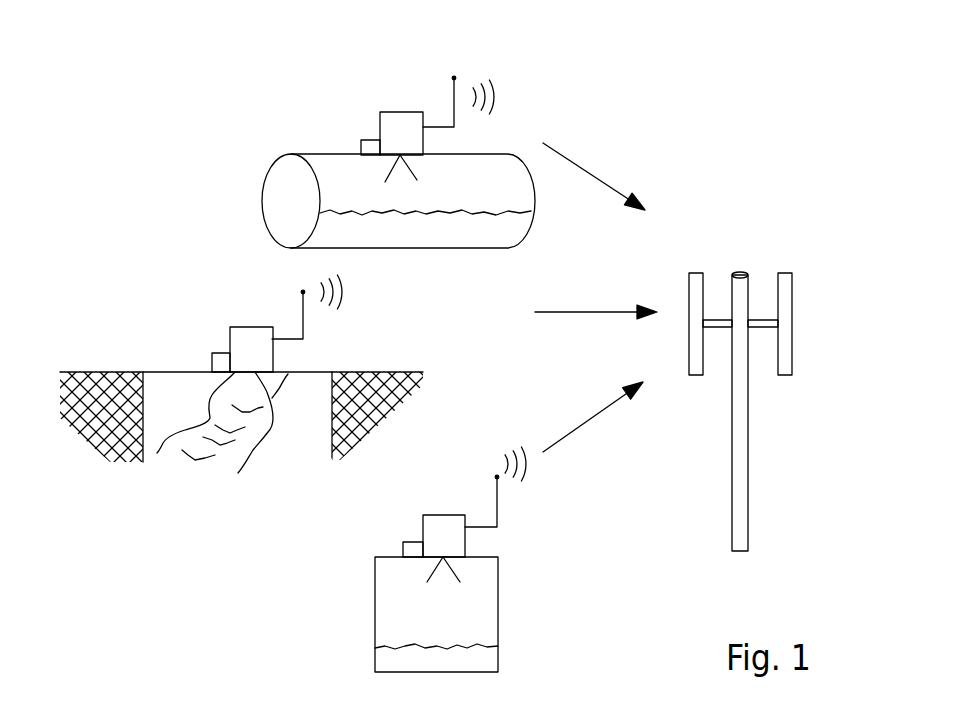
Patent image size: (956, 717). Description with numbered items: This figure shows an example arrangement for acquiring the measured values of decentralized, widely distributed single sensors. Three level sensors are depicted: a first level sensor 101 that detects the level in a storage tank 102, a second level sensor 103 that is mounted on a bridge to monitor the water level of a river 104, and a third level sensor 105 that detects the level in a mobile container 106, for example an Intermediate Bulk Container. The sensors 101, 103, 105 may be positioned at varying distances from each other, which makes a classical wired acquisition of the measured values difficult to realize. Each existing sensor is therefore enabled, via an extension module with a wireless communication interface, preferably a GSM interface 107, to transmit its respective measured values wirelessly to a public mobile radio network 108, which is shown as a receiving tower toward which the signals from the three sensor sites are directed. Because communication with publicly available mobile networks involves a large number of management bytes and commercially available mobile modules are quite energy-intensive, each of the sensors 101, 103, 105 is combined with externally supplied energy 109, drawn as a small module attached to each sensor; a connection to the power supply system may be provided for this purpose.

The first level sensor 101 is at (397, 112).
The storage tank 102 is at (262, 187).
The second level sensor 103 is at (243, 327).
The river 104 is at (183, 465).
The third level sensor 105 is at (435, 515).
The mobile container 106 is at (375, 610).
The GSM interface 107 is at (458, 90).
The public mobile radio network 108 is at (740, 275).
The externally supplied energy 109 is at (360, 148).